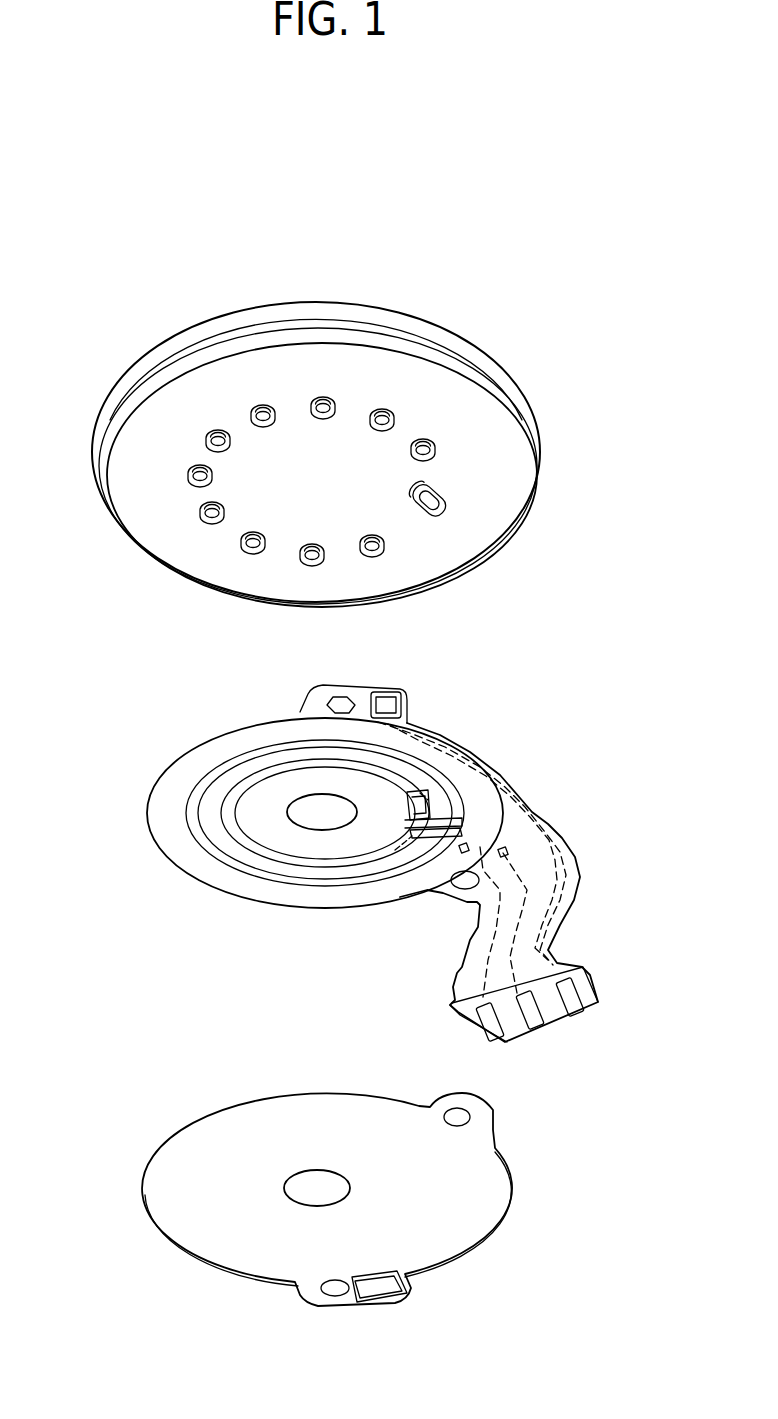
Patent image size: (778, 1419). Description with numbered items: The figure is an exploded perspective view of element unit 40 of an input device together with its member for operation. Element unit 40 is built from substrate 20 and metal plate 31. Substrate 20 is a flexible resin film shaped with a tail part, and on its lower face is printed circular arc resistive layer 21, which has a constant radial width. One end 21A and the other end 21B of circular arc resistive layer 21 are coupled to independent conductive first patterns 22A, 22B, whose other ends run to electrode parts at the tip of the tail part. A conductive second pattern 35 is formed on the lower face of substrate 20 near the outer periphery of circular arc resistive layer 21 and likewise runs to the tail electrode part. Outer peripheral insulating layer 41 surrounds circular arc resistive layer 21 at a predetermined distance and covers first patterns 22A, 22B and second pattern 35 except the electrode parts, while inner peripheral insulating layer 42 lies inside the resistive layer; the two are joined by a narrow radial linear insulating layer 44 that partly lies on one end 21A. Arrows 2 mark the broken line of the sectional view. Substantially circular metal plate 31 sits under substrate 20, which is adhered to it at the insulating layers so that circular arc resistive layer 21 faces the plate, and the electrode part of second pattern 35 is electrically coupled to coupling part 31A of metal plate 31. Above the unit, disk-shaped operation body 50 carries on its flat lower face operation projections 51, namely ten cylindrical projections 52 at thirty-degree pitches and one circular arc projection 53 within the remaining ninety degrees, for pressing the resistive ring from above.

The operation body 50 is at (447, 333).
The operation projections 51 is at (640, 390).
The cylindrical projections 52 is at (435, 445).
The circular arc projection 53 is at (443, 503).
The element unit 40 is at (95, 662).
The substrate 20 is at (202, 740).
The circular arc resistive layer 21 is at (210, 818).
The one end of circular arc resistive layer 21A is at (443, 840).
The other end of circular arc resistive layer 21B is at (443, 817).
The arrows 2 is at (420, 793).
The second pattern 35 is at (558, 863).
The first pattern 22A is at (500, 913).
The first pattern 22B is at (533, 888).
The outer peripheral insulating layer 41 is at (350, 897).
The inner peripheral insulating layer 42 is at (312, 843).
The linear insulating layer 44 is at (427, 833).
The metal plate 31 is at (215, 1125).
The coupling part 31A is at (392, 1283).